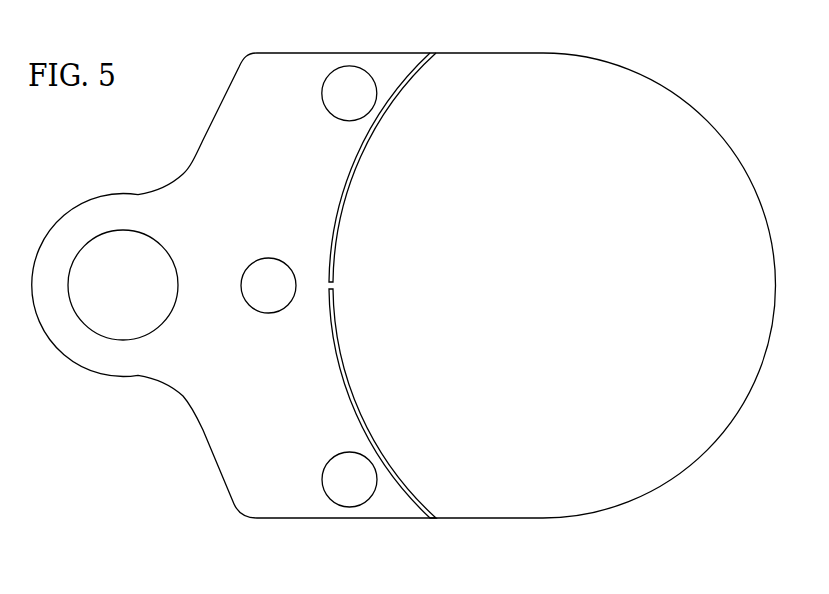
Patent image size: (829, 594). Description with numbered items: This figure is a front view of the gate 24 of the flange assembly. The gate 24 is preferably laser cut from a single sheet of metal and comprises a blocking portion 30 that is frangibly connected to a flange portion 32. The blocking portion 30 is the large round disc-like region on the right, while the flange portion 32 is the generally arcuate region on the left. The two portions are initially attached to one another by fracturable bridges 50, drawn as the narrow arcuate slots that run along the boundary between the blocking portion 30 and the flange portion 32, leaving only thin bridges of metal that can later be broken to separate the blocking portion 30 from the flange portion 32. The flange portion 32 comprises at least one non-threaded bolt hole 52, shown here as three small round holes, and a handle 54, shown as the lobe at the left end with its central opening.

The gate 24 is at (712, 72).
The blocking portion 30 is at (517, 83).
The flange portion 32 is at (265, 64).
The fracturable bridges 50 is at (428, 55).
The non-threaded bolt hole 52 is at (350, 92).
The handle 54 is at (75, 337).